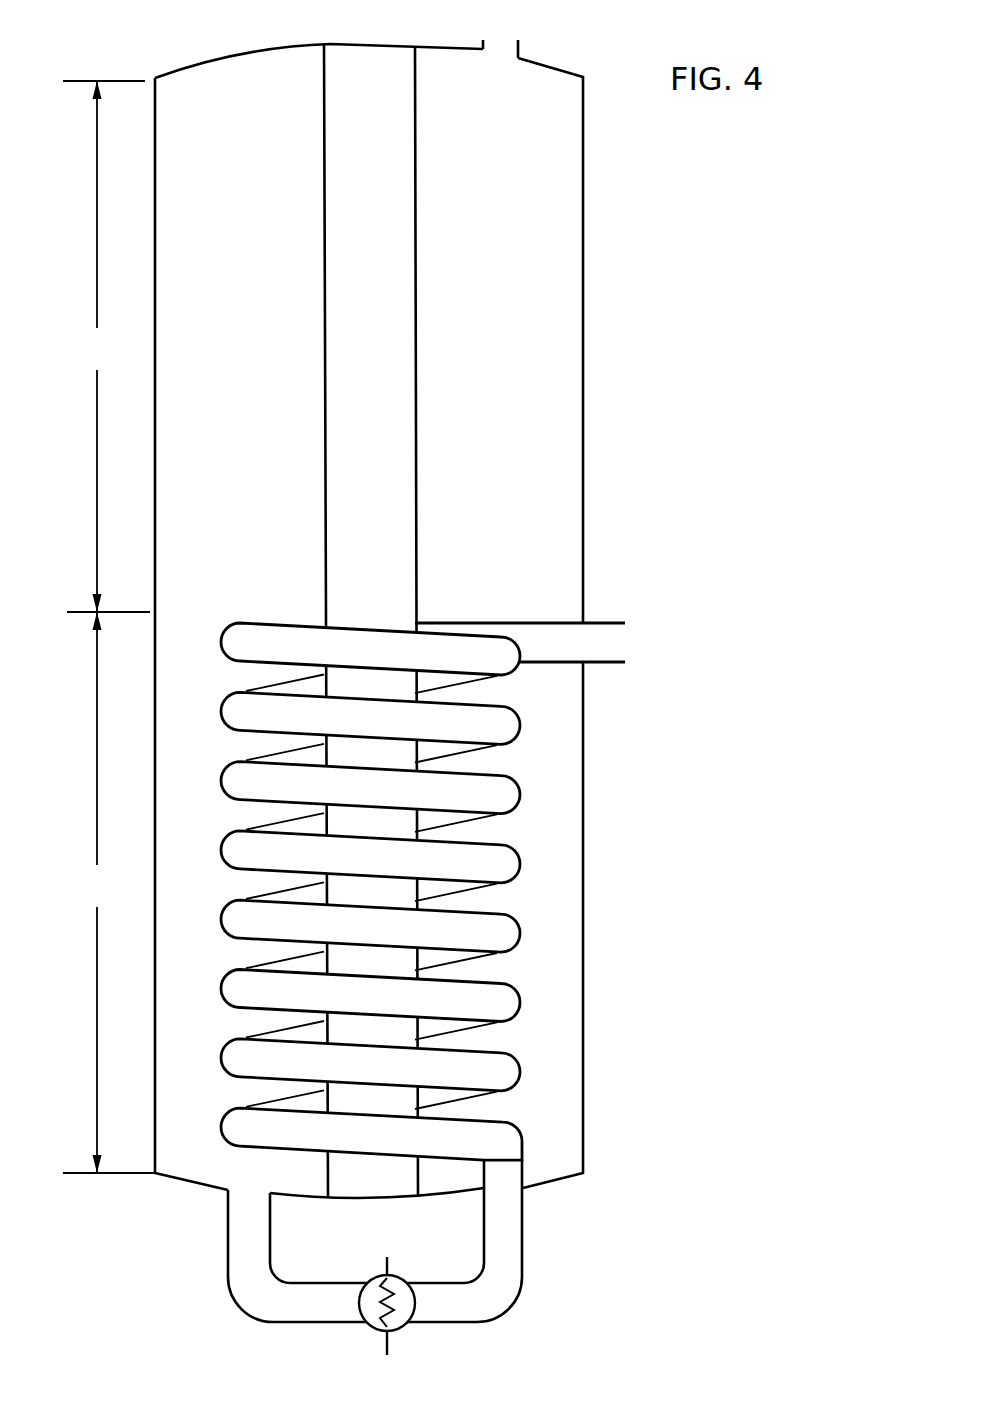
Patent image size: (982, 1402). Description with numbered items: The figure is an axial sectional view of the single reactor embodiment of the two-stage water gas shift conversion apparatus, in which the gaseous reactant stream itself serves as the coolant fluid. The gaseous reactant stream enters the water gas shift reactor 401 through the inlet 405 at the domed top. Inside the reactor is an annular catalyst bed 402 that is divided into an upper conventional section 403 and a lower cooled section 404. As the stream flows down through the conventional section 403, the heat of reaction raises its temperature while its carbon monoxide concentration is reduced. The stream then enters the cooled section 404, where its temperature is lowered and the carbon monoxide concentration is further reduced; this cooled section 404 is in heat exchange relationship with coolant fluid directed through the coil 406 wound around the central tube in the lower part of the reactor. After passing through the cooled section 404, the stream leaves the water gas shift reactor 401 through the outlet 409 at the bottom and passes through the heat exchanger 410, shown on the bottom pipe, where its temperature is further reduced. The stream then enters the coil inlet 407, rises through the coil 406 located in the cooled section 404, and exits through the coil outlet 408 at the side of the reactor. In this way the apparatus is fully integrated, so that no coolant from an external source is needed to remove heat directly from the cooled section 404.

The water gas shift reactor 401 is at (130, 64).
The annular catalyst bed 402 is at (567, 449).
The conventional section 403 is at (106, 346).
The cooled section 404 is at (109, 892).
The inlet 405 is at (505, 45).
The coil 406 is at (522, 728).
The coil inlet 407 is at (521, 1236).
The coil outlet 408 is at (617, 643).
The outlet 409 is at (235, 1233).
The heat exchanger 410 is at (412, 1333).